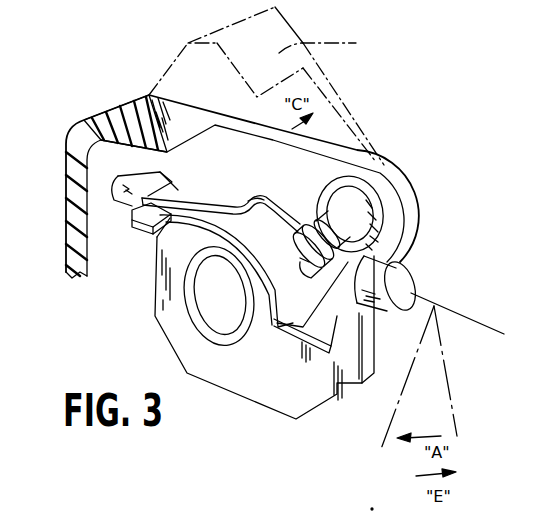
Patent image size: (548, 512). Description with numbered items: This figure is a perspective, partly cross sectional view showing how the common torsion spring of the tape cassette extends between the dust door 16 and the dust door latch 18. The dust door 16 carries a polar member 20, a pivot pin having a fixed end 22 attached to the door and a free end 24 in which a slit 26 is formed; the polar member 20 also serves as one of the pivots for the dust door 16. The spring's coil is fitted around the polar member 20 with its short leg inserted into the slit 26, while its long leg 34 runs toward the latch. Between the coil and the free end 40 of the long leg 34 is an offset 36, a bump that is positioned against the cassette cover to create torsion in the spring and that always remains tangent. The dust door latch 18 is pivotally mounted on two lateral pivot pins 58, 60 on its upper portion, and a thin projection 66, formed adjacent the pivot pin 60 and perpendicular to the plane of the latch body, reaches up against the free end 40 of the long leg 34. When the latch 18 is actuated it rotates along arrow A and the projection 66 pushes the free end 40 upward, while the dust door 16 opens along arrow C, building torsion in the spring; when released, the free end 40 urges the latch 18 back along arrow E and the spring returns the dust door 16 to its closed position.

The dust door 16 is at (172, 122).
The dust door latch 18 is at (228, 382).
The polar member 20 is at (350, 227).
The fixed end 22 is at (368, 204).
The free end 24 is at (307, 288).
The slit 26 is at (290, 250).
The long leg 34 is at (219, 207).
The offset 36 is at (262, 200).
The free end of the long leg 40 is at (143, 197).
The pivot pin 58 is at (397, 283).
The pivot pin 60 is at (122, 198).
The projection 66 is at (137, 226).